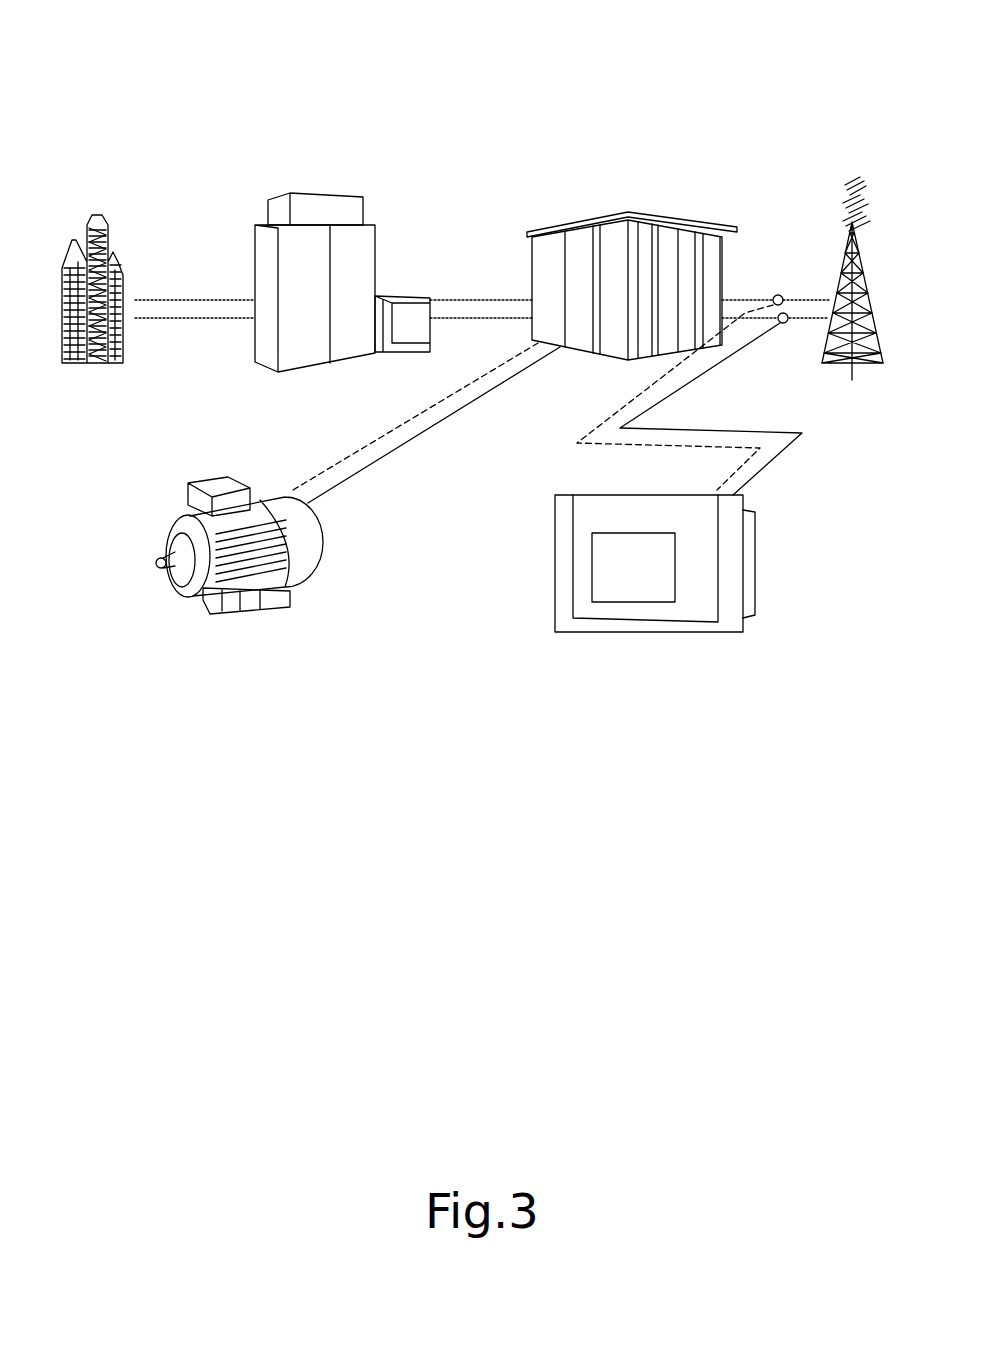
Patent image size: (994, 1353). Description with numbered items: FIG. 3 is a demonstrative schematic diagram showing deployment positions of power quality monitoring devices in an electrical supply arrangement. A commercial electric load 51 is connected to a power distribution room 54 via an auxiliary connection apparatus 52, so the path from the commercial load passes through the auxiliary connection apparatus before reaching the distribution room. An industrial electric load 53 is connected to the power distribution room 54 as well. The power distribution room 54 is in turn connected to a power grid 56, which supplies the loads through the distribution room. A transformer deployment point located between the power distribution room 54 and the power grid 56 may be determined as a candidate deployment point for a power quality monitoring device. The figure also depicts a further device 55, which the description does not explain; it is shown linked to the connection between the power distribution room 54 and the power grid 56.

The commercial electric load 51 is at (112, 252).
The auxiliary connection apparatus 52 is at (307, 193).
The industrial electric load 53 is at (233, 617).
The power distribution room 54 is at (628, 212).
The display / monitoring device 55 is at (602, 633).
The power grid 56 is at (852, 173).